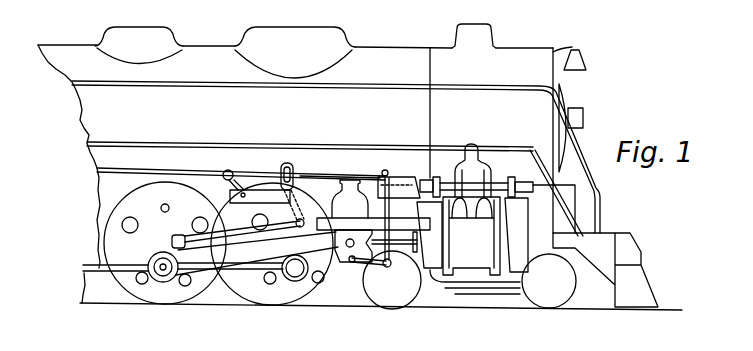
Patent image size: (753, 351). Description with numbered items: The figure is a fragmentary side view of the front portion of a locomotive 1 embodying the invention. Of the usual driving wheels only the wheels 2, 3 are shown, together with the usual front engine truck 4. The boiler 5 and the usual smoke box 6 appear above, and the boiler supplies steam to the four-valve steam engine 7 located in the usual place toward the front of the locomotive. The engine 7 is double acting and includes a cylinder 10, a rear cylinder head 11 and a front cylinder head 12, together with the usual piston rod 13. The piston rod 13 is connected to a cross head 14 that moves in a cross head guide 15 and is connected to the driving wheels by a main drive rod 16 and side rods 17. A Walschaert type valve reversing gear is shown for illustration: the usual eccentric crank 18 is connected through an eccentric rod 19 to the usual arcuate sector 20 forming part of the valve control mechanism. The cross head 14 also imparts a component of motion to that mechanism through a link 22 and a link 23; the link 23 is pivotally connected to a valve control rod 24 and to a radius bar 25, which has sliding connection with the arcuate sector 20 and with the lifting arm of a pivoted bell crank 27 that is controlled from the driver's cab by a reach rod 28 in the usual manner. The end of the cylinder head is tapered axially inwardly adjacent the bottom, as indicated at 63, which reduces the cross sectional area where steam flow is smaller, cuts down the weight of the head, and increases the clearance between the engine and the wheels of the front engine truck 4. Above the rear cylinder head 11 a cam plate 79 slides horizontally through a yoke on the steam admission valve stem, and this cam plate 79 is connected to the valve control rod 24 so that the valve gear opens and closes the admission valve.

The locomotive 1 is at (213, 37).
The driving wheel 2 is at (140, 292).
The driving wheel 3 is at (286, 300).
The front engine truck 4 is at (478, 308).
The boiler 5 is at (372, 53).
The smoke box 6 is at (508, 58).
The steam engine 7 is at (465, 272).
The cylinder 10 is at (477, 264).
The rear cylinder head 11 is at (432, 266).
The front cylinder head 12 is at (524, 229).
The piston rod 13 is at (403, 245).
The cross head 14 is at (348, 254).
The cross head guide 15 is at (344, 218).
The main drive rod 16 is at (231, 262).
The side rod 17 is at (102, 272).
The eccentric crank 18 is at (170, 243).
The eccentric rod 19 is at (249, 192).
The arcuate sector 20 is at (285, 163).
The link 22 is at (361, 264).
The link 23 is at (386, 209).
The valve control rod 24 is at (393, 170).
The radius bar 25 is at (324, 180).
The bell crank 27 is at (233, 170).
The reach rod 28 is at (185, 170).
The taper 63 is at (392, 280).
The cam plate 79 is at (452, 177).